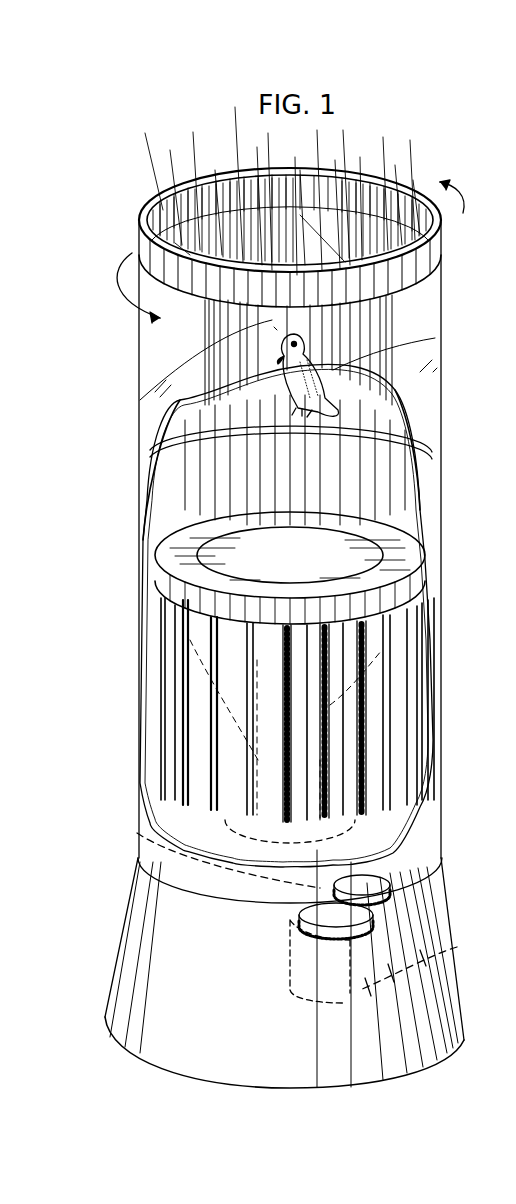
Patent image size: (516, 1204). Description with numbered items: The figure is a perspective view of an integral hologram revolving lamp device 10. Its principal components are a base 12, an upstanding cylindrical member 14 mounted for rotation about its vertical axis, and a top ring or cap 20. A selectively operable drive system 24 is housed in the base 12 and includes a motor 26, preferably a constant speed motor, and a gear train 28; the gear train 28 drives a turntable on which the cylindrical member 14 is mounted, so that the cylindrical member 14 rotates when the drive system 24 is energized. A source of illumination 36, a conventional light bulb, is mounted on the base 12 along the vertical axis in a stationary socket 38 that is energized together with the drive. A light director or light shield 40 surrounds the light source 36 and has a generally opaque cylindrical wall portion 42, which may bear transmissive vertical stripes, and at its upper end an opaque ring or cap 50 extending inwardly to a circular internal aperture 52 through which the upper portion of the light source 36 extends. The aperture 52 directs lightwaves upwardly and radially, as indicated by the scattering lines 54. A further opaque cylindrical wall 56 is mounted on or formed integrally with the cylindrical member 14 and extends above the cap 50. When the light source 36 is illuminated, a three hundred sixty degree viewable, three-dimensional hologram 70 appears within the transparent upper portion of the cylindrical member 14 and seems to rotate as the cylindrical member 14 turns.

The integral hologram revolving lamp device 10 is at (118, 488).
The base 12 is at (205, 1012).
The cylindrical member 14 is at (138, 336).
The top ring or cap 20 is at (142, 243).
The drive system 24 is at (280, 931).
The motor 26 is at (457, 947).
The gear train 28 is at (137, 833).
The source of illumination 36 is at (170, 572).
The stationary socket 38 is at (168, 716).
The light director or light shield 40 is at (152, 612).
The cylindrical wall portion 42 is at (165, 652).
The ring or cap 50 is at (400, 570).
The circular internal aperture 52 is at (178, 472).
The scattering lines 54 is at (264, 409).
The opaque cylindrical wall 56 is at (430, 528).
The hologram 70 is at (315, 349).